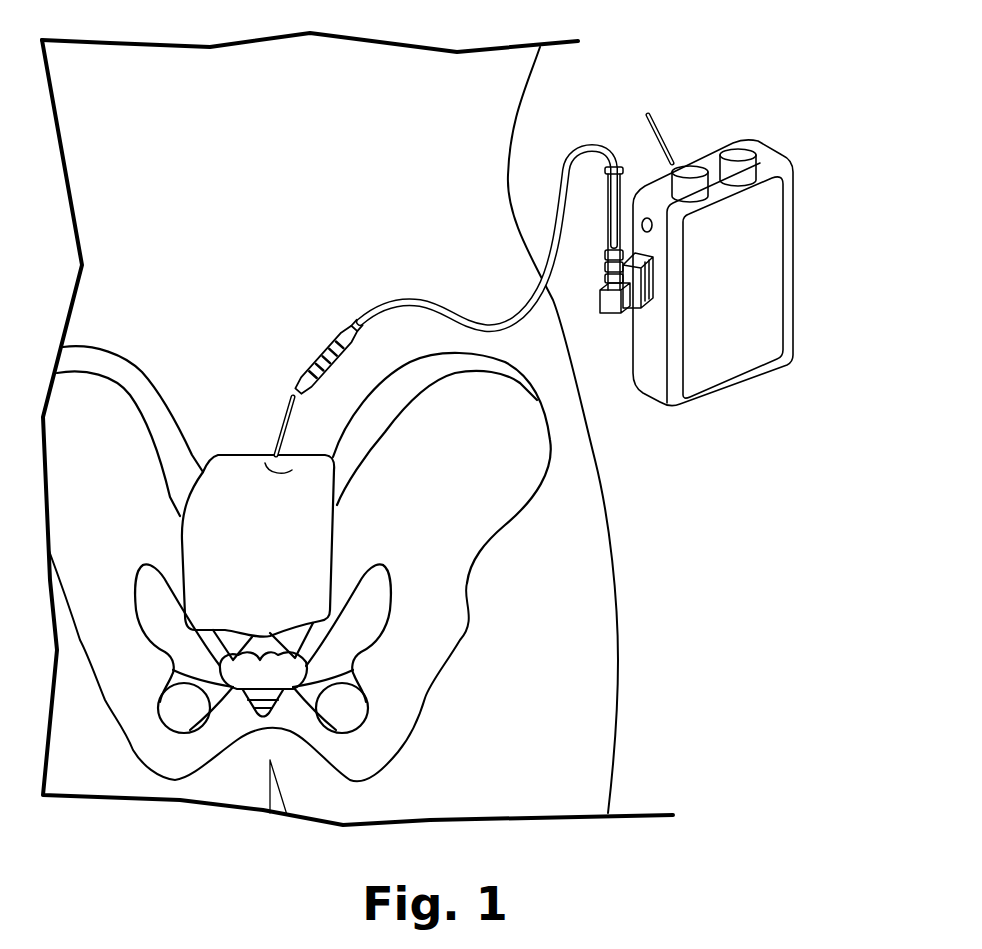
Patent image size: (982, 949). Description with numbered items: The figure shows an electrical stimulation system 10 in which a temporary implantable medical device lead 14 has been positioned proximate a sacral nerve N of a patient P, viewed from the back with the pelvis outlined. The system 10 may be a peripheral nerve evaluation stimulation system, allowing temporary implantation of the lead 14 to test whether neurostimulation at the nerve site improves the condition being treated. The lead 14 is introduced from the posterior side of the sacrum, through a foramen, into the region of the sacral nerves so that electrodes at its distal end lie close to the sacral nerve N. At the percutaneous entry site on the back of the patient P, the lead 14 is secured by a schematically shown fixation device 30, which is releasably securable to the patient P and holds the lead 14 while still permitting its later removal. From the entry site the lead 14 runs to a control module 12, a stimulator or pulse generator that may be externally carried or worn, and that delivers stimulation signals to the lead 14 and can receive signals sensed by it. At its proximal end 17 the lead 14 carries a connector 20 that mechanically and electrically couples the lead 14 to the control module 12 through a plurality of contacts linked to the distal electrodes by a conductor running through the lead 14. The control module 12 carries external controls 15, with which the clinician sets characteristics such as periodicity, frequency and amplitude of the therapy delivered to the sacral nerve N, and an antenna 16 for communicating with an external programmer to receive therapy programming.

The electrical stimulation system 10 is at (775, 72).
The control module 12 is at (762, 275).
The temporary implantable medical device lead 14 is at (390, 302).
The external controls 15 is at (786, 168).
The antenna 16 is at (668, 133).
The proximal end 17 is at (619, 326).
The connector 20 is at (654, 277).
The fixation device 30 is at (305, 580).
The patient P is at (79, 127).
The sacral nerve N is at (198, 610).